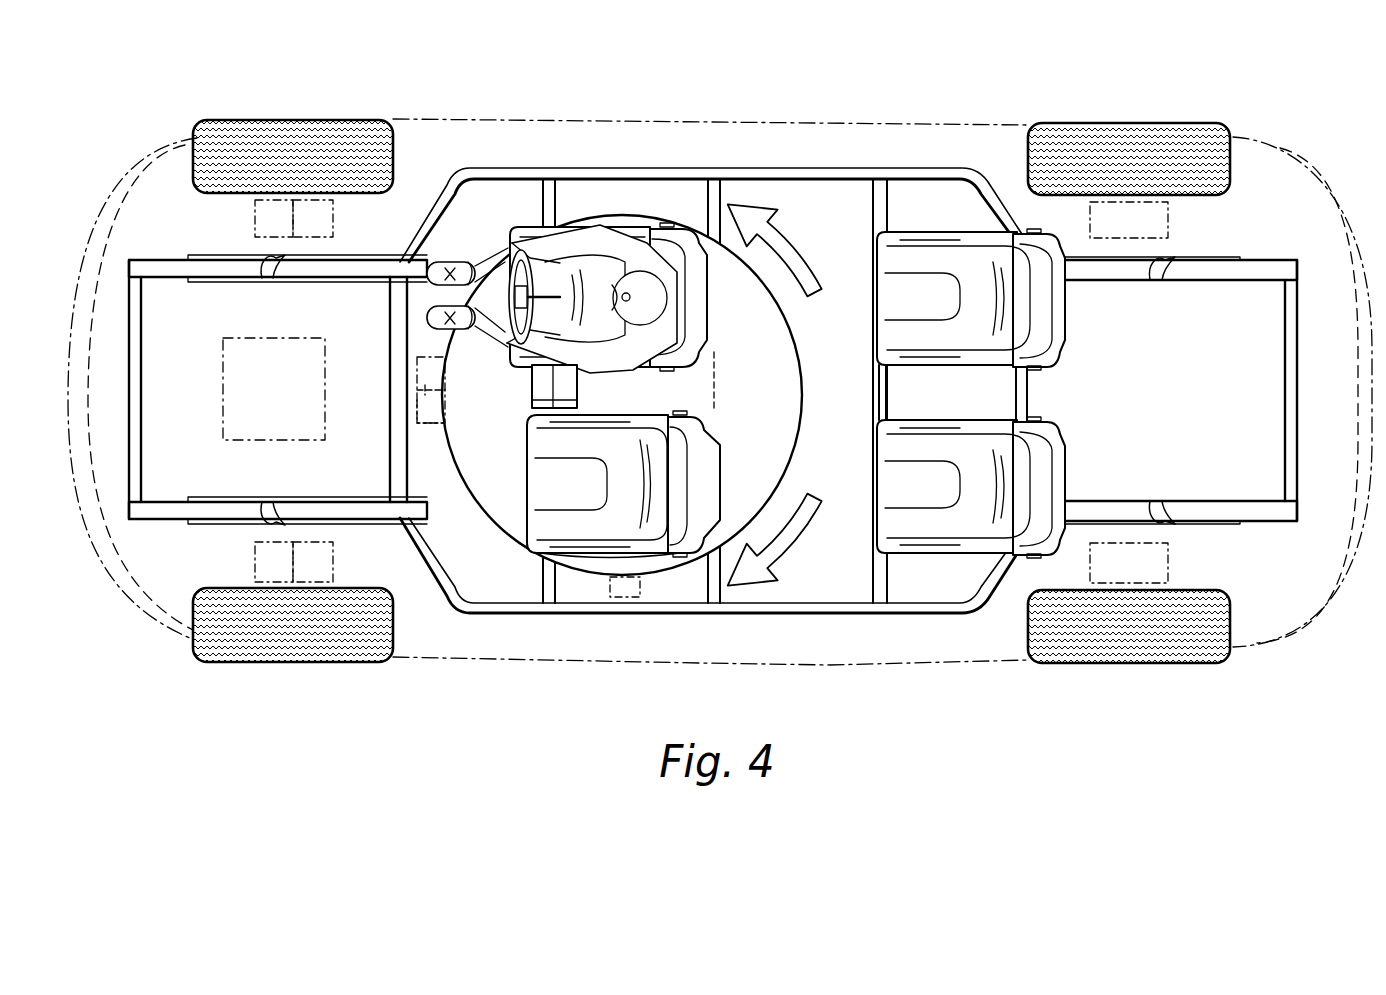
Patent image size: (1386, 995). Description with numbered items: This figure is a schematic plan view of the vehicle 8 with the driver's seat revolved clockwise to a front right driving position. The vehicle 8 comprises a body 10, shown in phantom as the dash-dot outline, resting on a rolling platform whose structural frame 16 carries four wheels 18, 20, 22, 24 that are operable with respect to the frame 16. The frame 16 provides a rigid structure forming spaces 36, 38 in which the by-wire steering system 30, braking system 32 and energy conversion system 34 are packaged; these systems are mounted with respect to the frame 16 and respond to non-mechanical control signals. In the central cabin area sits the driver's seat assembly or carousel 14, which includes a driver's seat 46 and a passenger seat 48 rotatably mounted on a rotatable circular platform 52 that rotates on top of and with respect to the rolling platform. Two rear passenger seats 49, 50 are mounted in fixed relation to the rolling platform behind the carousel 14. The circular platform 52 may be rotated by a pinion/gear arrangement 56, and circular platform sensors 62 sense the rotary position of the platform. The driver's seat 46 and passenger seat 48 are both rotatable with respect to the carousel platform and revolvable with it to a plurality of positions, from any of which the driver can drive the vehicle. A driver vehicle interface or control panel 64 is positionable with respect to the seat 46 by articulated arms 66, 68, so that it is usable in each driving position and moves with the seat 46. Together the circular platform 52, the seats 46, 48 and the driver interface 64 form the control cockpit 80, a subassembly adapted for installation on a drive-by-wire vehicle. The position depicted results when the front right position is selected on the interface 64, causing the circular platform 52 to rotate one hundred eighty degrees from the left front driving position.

The vehicle 8 is at (929, 80).
The body 10 is at (748, 118).
The driver's seat assembly or carousel 14 is at (571, 560).
The frame 16 is at (478, 618).
The wheel 18 is at (282, 664).
The wheel 20 is at (287, 122).
The wheel 22 is at (1145, 664).
The wheel 24 is at (1145, 124).
The steering system 30 is at (265, 218).
The braking system 32 is at (305, 243).
The energy conversion system 34 is at (225, 398).
The space 36 is at (278, 390).
The space 38 is at (830, 369).
The driver's seat 46 is at (672, 238).
The passenger seat 48 is at (697, 545).
The rear passenger seat 49 is at (1043, 305).
The rear passenger seat 50 is at (1043, 468).
The circular platform 52 is at (603, 582).
The pinion/gear arrangement 56 is at (418, 378).
The circular platform sensors 62 is at (420, 396).
The driver vehicle interface or control panel 64 is at (487, 288).
The articulated arm 66 is at (530, 362).
The articulated arm 68 is at (567, 385).
The control cockpit 80 is at (575, 184).